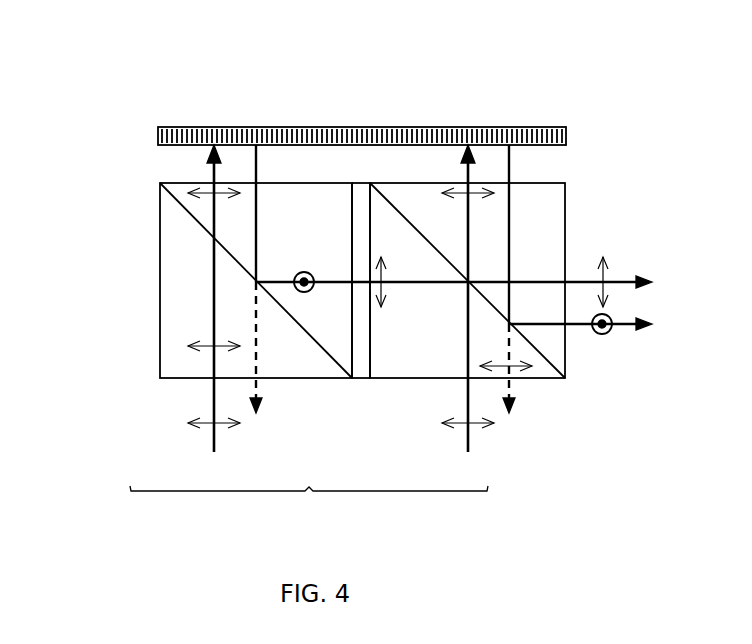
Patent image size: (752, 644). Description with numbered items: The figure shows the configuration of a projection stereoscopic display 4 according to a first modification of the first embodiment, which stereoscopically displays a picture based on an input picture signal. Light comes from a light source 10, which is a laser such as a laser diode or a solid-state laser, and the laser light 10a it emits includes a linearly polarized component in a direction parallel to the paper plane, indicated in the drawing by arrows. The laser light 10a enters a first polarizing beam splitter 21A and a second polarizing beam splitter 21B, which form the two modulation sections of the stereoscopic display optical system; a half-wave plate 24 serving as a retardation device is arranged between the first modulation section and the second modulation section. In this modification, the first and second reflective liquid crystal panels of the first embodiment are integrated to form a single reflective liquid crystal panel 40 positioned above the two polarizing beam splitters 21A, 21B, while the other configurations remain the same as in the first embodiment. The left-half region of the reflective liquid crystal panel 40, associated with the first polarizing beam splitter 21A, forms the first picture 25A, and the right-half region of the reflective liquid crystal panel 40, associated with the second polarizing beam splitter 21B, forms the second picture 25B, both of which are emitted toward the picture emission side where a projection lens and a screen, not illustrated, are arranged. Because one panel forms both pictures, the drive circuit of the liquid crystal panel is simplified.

The stereoscopic display 4 is at (602, 90).
The reflective liquid crystal panel 40 is at (360, 127).
The light source 10 is at (309, 355).
The laser light 10a is at (212, 412).
The first polarizing beam splitter 21A is at (170, 281).
The second polarizing beam splitter 21B is at (553, 224).
The λ/2 wave plate 24 is at (365, 378).
The first picture 25A is at (475, 279).
The second picture 25B is at (601, 279).